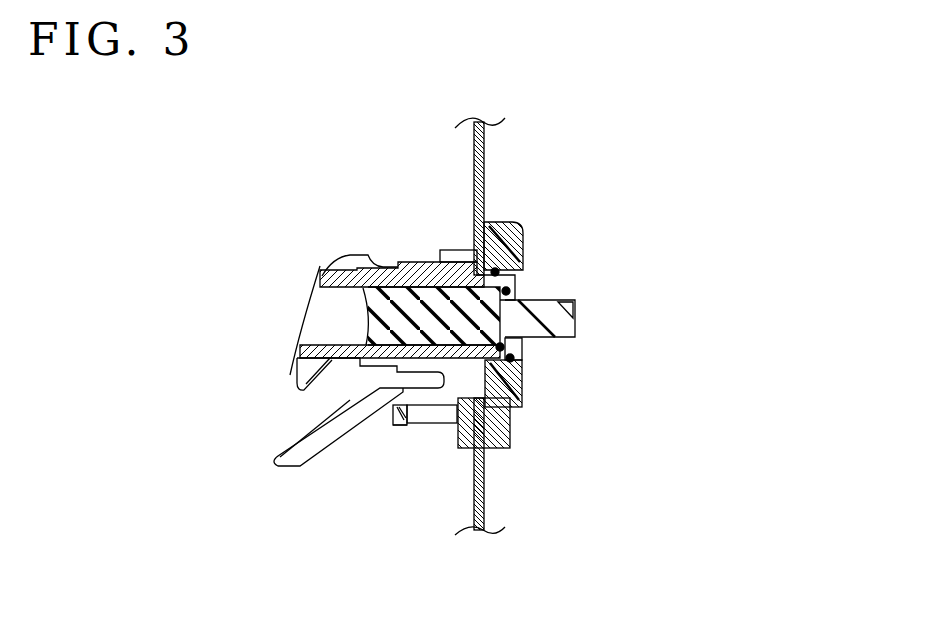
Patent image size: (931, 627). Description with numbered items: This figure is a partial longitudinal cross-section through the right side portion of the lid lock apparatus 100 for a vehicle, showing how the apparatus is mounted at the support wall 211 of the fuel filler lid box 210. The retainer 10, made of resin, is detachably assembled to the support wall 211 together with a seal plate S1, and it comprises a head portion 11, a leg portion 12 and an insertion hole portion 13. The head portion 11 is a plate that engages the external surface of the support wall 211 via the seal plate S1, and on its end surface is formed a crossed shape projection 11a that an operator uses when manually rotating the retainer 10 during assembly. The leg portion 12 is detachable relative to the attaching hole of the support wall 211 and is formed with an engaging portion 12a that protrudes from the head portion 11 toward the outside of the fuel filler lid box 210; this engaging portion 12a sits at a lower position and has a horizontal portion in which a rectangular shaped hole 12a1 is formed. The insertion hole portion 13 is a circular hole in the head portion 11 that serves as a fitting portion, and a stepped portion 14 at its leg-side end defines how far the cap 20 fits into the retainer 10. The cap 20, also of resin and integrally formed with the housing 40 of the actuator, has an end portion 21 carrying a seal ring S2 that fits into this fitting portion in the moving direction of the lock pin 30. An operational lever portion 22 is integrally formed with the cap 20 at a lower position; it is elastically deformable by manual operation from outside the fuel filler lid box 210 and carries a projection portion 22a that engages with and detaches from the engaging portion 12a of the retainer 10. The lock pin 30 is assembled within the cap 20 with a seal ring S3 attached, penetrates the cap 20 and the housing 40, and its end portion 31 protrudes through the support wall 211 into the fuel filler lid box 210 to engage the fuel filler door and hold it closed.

The retainer 10 is at (508, 428).
The head portion 11 is at (523, 232).
The crossed shape projection 11a is at (522, 386).
The leg portion 12 is at (456, 250).
The engaging portion 12a is at (396, 430).
The rectangular shaped hole 12a1 is at (442, 426).
The insertion hole portion 13 is at (522, 368).
The stepped portion 14 is at (510, 408).
The cap 20 is at (422, 262).
The end portion 21 is at (516, 290).
The operational lever portion 22 is at (290, 466).
The projection portion 22a is at (406, 428).
The lock pin 30 is at (322, 314).
The end portion 31 is at (573, 318).
The housing 40 is at (300, 360).
The lid lock apparatus 100 is at (322, 276).
The fuel filler lid box 210 is at (472, 156).
The support wall 211 is at (485, 488).
The seal plate S1 is at (486, 215).
The seal ring S2 is at (520, 270).
The seal ring S3 is at (508, 350).